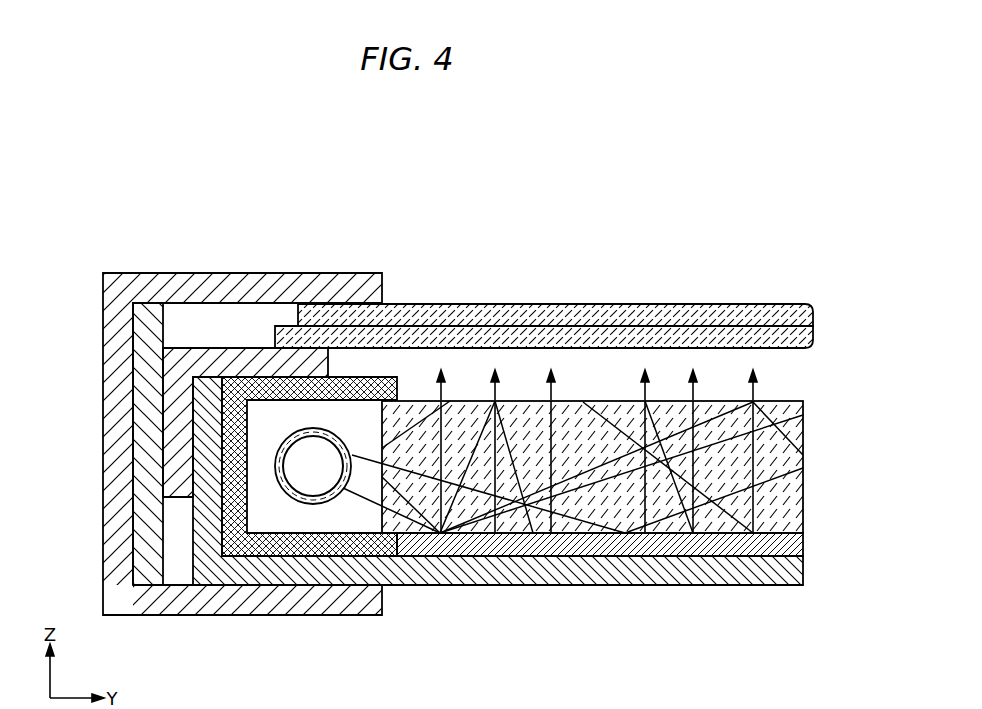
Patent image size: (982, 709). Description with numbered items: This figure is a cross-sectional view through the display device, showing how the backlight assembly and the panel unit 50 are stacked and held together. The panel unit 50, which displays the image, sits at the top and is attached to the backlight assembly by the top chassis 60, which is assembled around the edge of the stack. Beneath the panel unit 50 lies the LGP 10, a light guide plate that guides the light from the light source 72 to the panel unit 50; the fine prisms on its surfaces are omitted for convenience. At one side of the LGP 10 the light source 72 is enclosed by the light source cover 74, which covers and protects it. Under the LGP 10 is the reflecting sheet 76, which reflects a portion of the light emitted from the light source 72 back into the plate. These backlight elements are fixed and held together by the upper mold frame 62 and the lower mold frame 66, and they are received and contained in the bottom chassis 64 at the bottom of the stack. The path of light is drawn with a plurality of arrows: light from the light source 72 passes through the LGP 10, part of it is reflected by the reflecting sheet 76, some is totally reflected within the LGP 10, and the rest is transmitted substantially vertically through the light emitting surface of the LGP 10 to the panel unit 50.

The LGP 10 is at (777, 401).
The panel unit 50 is at (816, 304).
The top chassis 60 is at (298, 273).
The upper mold frame 62 is at (212, 348).
The bottom chassis 64 is at (804, 575).
The lower mold frame 66 is at (248, 616).
The light source 72 is at (313, 504).
The light source cover 74 is at (392, 556).
The reflecting sheet 76 is at (804, 547).